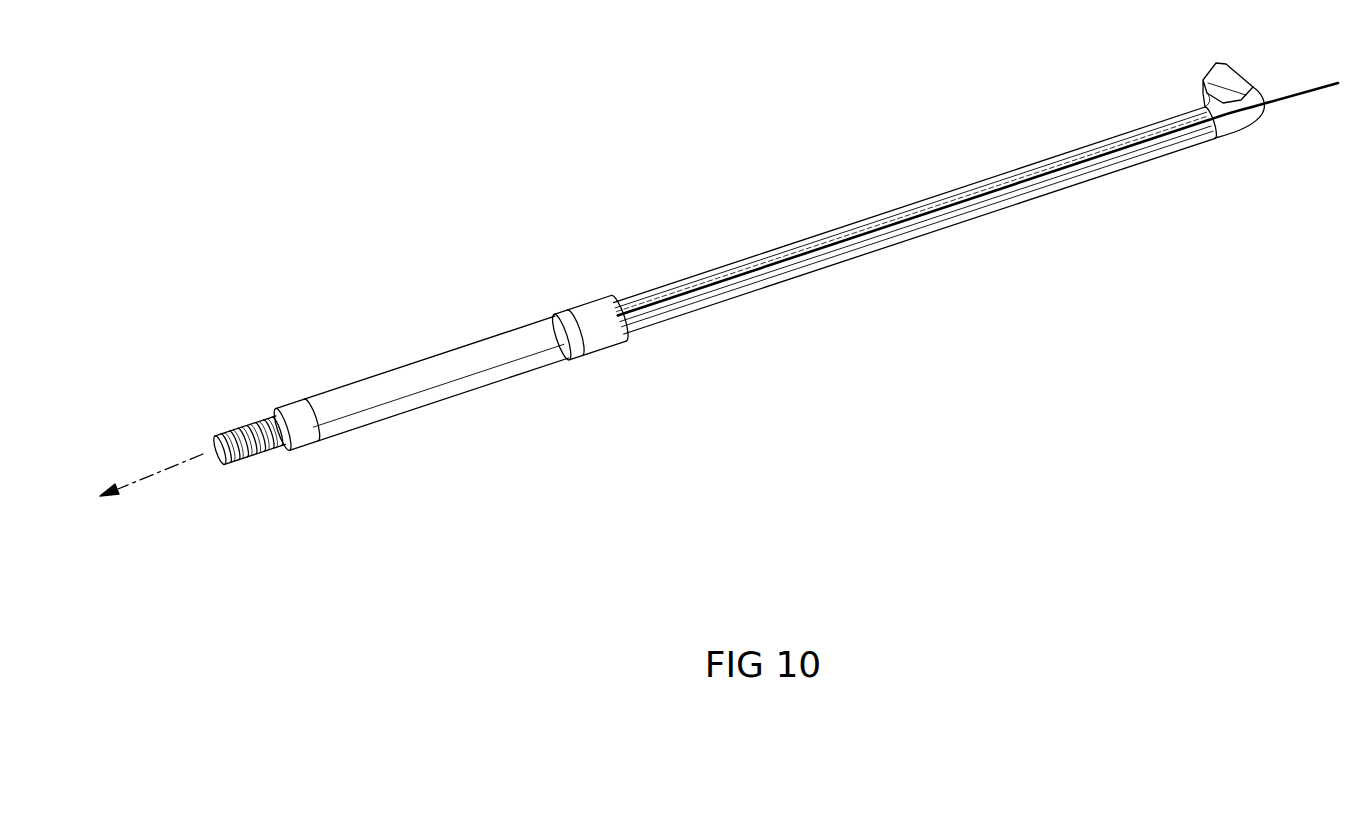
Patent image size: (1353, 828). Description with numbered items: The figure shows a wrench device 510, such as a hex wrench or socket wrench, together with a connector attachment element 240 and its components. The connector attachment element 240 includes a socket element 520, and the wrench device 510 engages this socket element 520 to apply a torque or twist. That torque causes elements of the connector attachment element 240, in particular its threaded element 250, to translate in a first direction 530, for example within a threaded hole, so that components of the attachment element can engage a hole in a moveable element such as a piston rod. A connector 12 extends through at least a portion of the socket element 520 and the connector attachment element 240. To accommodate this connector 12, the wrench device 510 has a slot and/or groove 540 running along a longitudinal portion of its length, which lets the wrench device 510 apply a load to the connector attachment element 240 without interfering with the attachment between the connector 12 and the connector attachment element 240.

The connector 12 is at (1273, 103).
The connector attachment element 240 is at (392, 417).
The threaded element 250 is at (263, 447).
The wrench device 510 is at (788, 285).
The socket element 520 is at (610, 342).
The first direction 530 is at (143, 477).
The slot and/or groove 540 is at (937, 220).